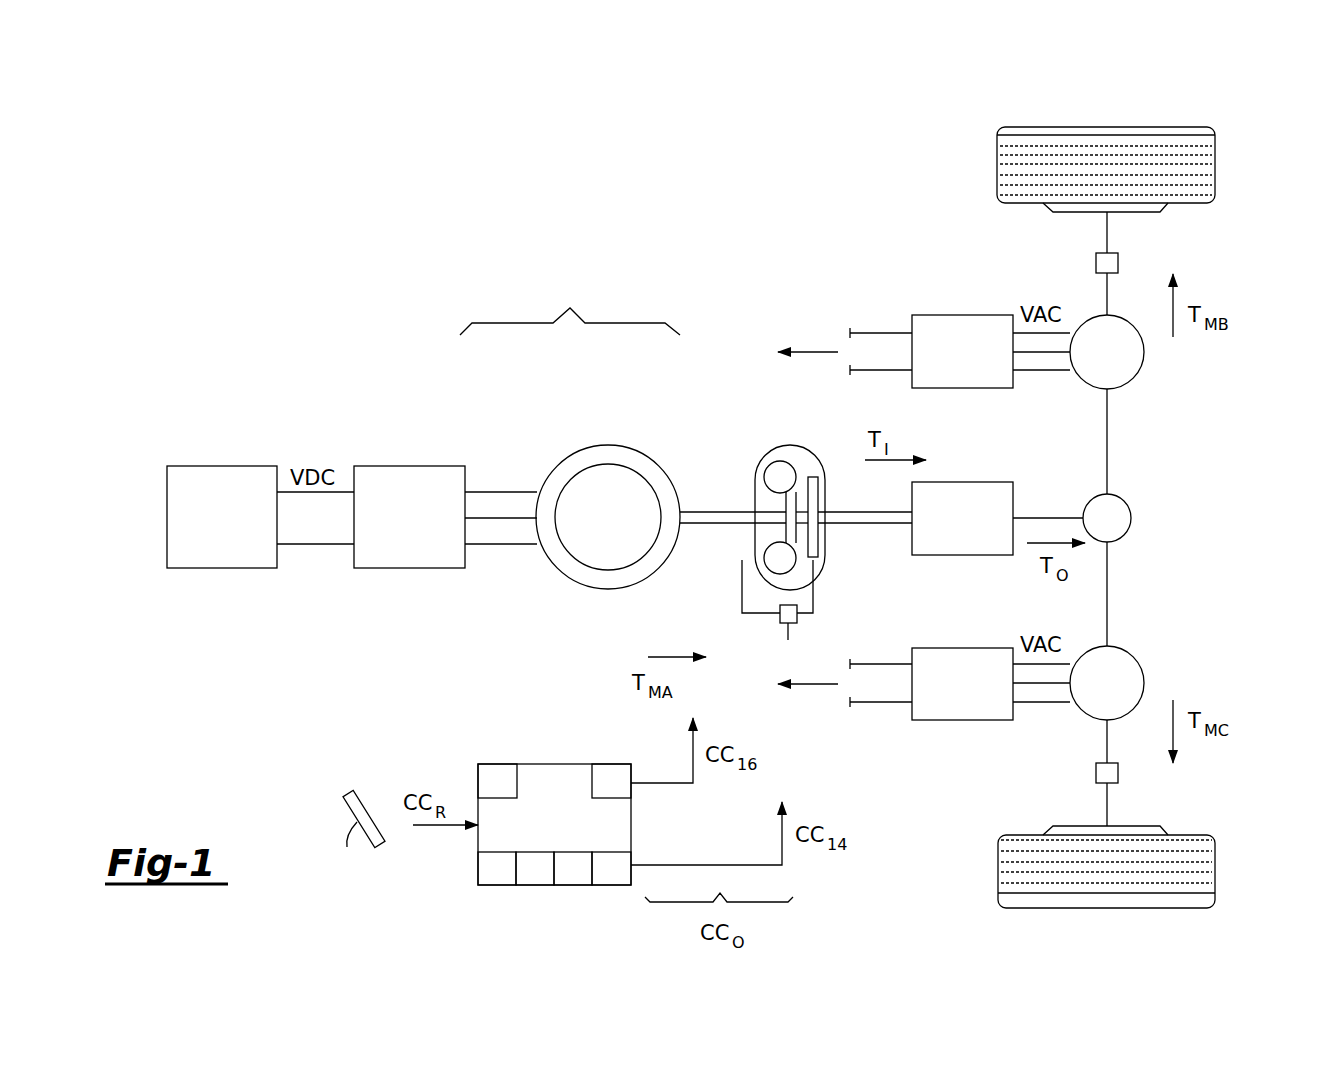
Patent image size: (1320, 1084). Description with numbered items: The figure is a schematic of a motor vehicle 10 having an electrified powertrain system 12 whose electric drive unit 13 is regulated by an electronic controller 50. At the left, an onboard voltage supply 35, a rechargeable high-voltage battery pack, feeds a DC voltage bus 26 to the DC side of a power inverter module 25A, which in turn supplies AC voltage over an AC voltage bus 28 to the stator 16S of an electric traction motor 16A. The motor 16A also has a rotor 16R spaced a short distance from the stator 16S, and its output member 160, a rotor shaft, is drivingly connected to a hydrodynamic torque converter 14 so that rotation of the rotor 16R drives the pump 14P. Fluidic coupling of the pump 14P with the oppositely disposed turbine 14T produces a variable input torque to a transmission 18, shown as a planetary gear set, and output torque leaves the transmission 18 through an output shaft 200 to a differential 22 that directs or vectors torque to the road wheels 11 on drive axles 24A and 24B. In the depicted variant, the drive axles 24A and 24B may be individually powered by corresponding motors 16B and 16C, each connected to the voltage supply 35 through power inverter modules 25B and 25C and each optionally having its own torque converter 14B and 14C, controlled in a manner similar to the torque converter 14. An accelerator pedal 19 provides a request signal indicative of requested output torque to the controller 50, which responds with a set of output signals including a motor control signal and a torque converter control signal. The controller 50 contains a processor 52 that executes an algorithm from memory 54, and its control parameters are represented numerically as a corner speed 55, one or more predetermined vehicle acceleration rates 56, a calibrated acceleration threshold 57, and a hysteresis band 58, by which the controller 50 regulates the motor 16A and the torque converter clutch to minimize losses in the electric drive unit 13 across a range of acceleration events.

The motor vehicle 10 is at (1192, 98).
The road wheels 11 is at (1080, 127).
The powertrain system 12 is at (613, 256).
The electric drive unit 13 is at (570, 304).
The torque converter 14 is at (748, 420).
The torque converter 14B is at (1096, 263).
The torque converter / torque converter clutch 14C is at (788, 640).
The pump 14P is at (770, 540).
The turbine 14T is at (808, 462).
The electric traction motor 16A is at (566, 420).
The motor 16B is at (1144, 352).
The motor 16C is at (1144, 683).
The rotor 16R is at (591, 572).
The stator 16S is at (616, 584).
The transmission 18 is at (960, 482).
The accelerator pedal 19 is at (340, 783).
The differential 22 is at (1131, 518).
The drive axle 24A is at (1107, 231).
The drive axle 24B is at (1107, 806).
The power inverter module 25A is at (408, 568).
The power inverter module 25B is at (962, 315).
The power inverter module 25C is at (958, 720).
The DC voltage bus 26 is at (285, 440).
The AC voltage bus 28 is at (505, 544).
The voltage supply 35 is at (218, 568).
The electronic controller 50 is at (571, 847).
The processor 52 is at (497, 781).
The memory 54 is at (611, 781).
The corner speed 55 is at (497, 868).
The predetermined vehicle acceleration rates 56 is at (535, 868).
The calibrated acceleration threshold 57 is at (573, 868).
The hysteresis band 58 is at (611, 868).
The output member 160 is at (708, 510).
The output shaft 200 is at (1047, 518).